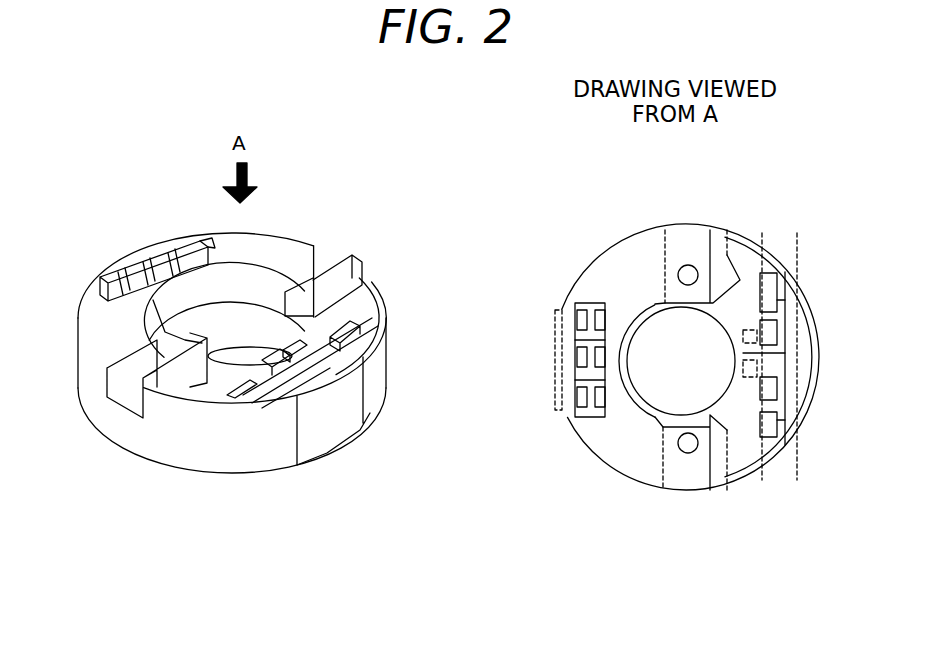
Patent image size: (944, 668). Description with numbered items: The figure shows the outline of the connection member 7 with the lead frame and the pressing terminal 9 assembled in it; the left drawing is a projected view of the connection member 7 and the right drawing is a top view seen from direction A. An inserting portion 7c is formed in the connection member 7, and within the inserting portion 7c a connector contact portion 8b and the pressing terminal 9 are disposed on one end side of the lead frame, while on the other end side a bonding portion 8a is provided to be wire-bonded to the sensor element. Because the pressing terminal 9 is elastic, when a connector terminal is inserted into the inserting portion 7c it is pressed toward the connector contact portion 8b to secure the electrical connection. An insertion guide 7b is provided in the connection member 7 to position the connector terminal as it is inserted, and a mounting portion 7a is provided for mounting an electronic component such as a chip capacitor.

The connection member 7 is at (217, 452).
The mounting portion 7a is at (352, 375).
The insertion guide 7b is at (705, 255).
The inserting portion 7c is at (200, 250).
The bonding portion 8a is at (750, 345).
The connector contact portion 8b is at (157, 258).
The pressing terminal 9 is at (145, 255).